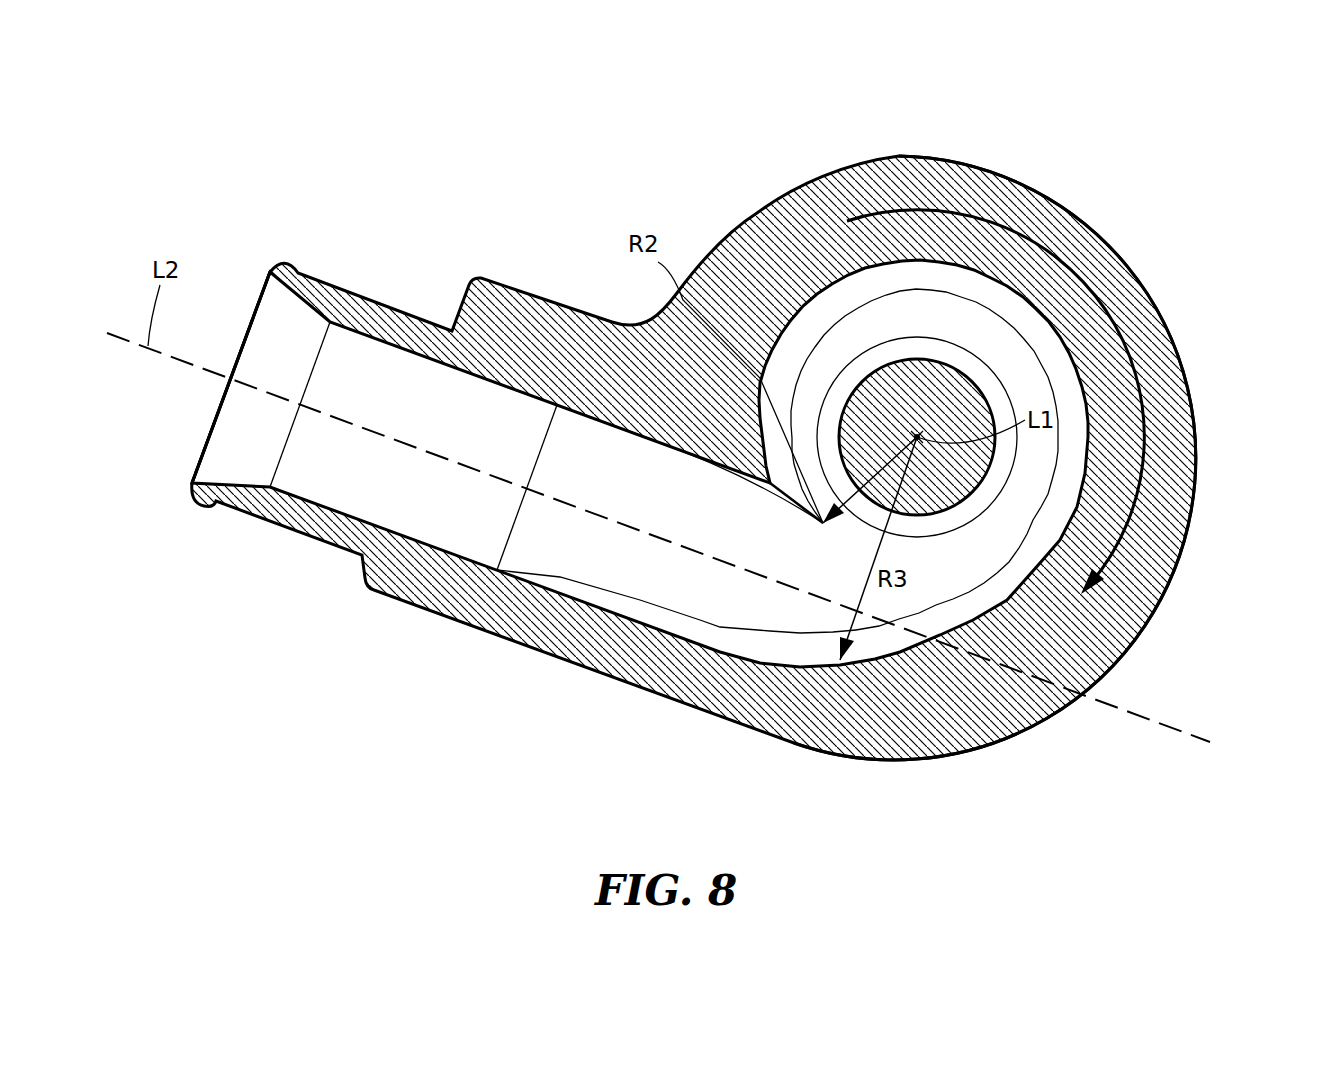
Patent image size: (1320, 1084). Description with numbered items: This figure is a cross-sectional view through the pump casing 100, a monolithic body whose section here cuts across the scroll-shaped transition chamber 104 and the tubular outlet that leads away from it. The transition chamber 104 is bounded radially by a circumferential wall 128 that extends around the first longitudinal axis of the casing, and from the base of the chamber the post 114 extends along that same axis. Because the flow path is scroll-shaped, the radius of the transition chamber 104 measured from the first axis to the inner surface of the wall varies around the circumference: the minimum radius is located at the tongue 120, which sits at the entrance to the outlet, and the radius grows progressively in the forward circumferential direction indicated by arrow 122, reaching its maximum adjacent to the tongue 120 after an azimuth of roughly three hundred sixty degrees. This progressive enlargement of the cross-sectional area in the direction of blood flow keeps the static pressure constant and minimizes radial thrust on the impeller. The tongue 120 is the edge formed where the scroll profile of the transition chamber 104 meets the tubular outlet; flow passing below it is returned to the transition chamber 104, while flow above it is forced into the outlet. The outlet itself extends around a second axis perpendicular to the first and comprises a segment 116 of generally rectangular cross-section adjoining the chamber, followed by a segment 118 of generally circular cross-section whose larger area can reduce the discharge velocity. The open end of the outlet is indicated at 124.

The pump casing 100 is at (336, 155).
The transition chamber 104 is at (880, 415).
The post 114 is at (880, 413).
The segment having a generally rectangular cross-sectional shape 116 is at (622, 484).
The segment of generally circular cross-sectional shape 118 is at (393, 489).
The tongue 120 is at (800, 510).
The arrow 122 is at (1145, 492).
The pipe end 124 is at (212, 420).
The wall 128 is at (1172, 398).